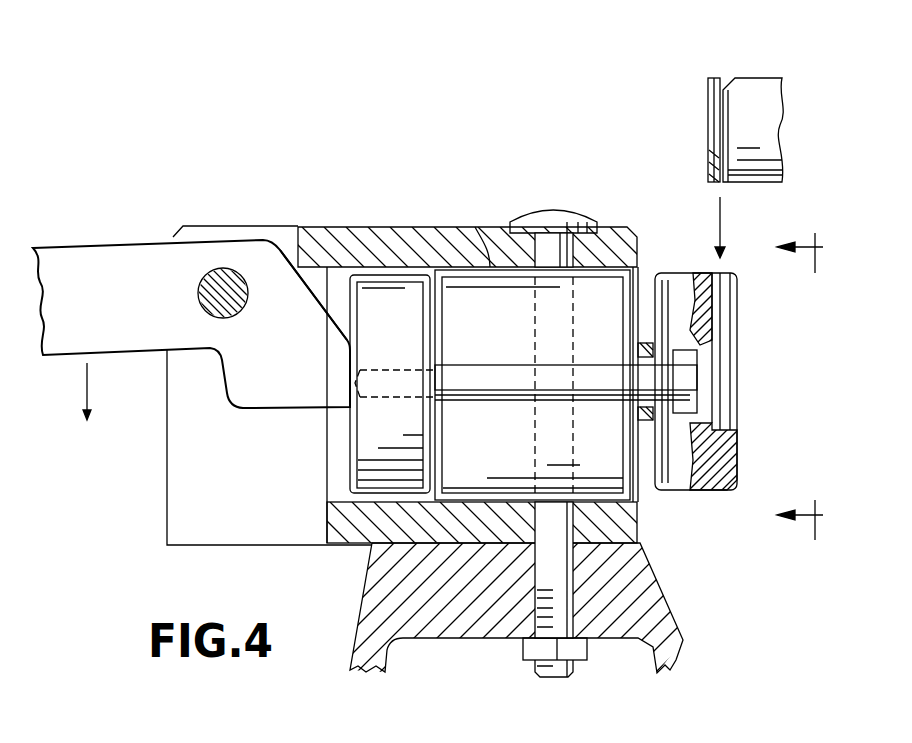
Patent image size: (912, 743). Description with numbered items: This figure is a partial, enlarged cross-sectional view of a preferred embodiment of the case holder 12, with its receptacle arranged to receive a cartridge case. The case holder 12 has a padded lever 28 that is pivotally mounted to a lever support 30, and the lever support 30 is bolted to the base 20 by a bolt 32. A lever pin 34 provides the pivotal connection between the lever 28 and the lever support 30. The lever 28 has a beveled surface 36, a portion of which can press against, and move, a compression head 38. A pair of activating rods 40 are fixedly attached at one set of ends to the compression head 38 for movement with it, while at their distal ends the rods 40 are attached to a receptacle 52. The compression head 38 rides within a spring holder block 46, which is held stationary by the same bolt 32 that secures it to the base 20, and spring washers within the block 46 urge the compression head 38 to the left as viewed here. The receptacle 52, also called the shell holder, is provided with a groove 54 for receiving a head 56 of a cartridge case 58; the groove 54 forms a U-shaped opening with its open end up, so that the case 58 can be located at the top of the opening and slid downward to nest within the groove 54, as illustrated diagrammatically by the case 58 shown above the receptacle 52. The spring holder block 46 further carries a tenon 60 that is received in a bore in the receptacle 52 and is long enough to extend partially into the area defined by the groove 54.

The case holder 12 is at (819, 386).
The base 20 is at (668, 598).
The padded lever 28 is at (118, 244).
The lever support 30 is at (362, 226).
The bolt 32 is at (543, 678).
The lever pin 34 is at (197, 292).
The beveled surface 36 is at (307, 302).
The compression head 38 is at (350, 458).
The activating rods 40 is at (493, 363).
The spring holder block 46 is at (475, 227).
The receptacle 52 is at (737, 457).
The groove 54 is at (720, 383).
The head 56 is at (717, 78).
The cartridge case 58 is at (770, 78).
The tenon 60 is at (643, 425).